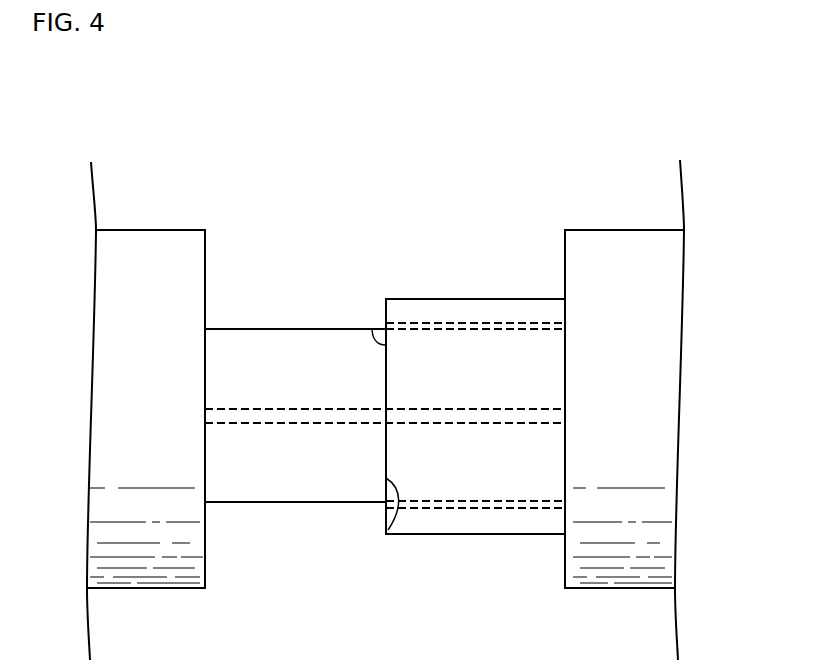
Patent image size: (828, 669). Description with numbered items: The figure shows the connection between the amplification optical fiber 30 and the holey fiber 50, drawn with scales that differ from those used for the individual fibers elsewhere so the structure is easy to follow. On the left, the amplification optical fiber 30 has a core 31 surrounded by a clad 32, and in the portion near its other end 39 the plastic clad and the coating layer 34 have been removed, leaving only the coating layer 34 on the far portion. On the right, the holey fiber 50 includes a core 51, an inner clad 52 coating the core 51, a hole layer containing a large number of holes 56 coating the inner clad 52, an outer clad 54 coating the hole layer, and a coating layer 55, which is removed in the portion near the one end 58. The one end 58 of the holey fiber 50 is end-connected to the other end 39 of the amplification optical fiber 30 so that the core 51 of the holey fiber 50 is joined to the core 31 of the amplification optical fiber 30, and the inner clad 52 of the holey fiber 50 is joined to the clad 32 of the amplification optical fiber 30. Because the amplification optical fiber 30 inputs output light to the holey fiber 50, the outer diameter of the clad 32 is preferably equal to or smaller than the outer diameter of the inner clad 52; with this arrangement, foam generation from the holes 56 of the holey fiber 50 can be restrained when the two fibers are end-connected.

The amplification optical fiber 30 is at (240, 132).
The core 31 is at (249, 415).
The clad 32 is at (233, 355).
The coating layer 34 is at (146, 253).
The other end 39 is at (388, 530).
The holey fiber 50 is at (640, 132).
The core 51 is at (507, 415).
The inner clad 52 is at (491, 355).
The outer clad 54 is at (473, 306).
The coating layer 55 is at (653, 250).
The holes 56 is at (430, 323).
The one end 58 is at (372, 328).